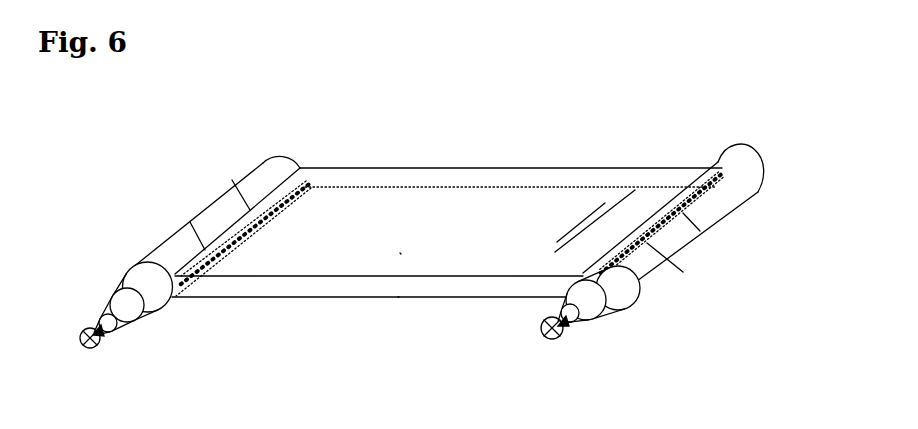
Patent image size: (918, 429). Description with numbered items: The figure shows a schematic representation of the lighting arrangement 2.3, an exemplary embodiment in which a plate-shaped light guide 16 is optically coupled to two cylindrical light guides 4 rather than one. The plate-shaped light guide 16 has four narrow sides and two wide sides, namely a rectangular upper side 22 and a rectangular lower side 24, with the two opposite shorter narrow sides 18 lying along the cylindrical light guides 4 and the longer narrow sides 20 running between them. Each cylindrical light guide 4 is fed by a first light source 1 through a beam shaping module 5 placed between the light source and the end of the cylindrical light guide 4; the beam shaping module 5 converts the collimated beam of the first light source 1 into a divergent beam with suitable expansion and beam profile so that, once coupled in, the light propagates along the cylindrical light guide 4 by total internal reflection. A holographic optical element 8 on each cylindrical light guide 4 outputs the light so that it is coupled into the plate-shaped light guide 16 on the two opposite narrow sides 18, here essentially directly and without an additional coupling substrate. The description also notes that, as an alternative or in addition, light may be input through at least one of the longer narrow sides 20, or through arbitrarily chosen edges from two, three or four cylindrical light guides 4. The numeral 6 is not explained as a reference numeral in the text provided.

The lighting arrangement 2.3 is at (148, 170).
The first light source 1 is at (88, 329).
The cylindrical light guide 4 is at (135, 266).
The beam shaping module 5 is at (116, 298).
The sleeve stitching 6 is at (190, 222).
The holographic optical element 8 is at (232, 180).
The plate-shaped light guide 16 is at (432, 205).
The shorter narrow sides 18 is at (300, 167).
The longer narrow sides 20 is at (540, 168).
The upper side 22 is at (400, 253).
The lower side 24 is at (398, 298).